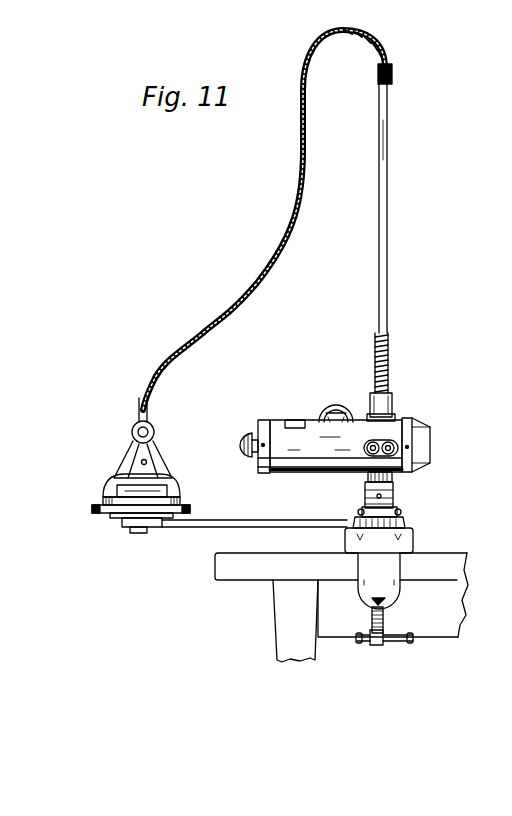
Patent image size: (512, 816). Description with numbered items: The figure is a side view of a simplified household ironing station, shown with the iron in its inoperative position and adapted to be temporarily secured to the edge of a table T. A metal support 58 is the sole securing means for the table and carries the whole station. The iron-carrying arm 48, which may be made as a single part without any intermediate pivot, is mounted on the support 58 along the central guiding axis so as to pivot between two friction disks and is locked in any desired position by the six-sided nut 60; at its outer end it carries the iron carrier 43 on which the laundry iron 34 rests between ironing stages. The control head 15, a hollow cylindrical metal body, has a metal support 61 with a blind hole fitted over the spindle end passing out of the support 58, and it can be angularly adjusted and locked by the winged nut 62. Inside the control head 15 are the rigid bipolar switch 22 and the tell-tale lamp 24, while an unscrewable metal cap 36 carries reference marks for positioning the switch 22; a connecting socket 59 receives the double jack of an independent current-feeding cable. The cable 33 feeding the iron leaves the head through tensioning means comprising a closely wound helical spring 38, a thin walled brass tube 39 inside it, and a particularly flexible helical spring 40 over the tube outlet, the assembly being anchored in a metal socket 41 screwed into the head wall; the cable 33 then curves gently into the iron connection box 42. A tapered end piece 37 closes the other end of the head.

The control head 15 is at (330, 440).
The rigid bipolar switch 22 is at (240, 446).
The tell-tale lamp 24 is at (334, 415).
The cable 33 is at (298, 172).
The laundry iron 34 is at (153, 493).
The metal cap 36 is at (265, 418).
The tapered end cone 37 is at (413, 452).
The helical spring 38 is at (389, 345).
The thin walled brass tube 39 is at (390, 137).
The helical spring 40 is at (392, 74).
The metal socket 41 is at (383, 408).
The iron connection box 42 is at (155, 461).
The iron carrier 43 is at (192, 510).
The pivoting arm 48 is at (259, 527).
The metal support 58 is at (380, 545).
The connecting socket 59 is at (393, 438).
The six-sided nut 60 is at (399, 512).
The metal support 61 is at (393, 481).
The winged nut 62 is at (395, 497).
The table T is at (253, 582).